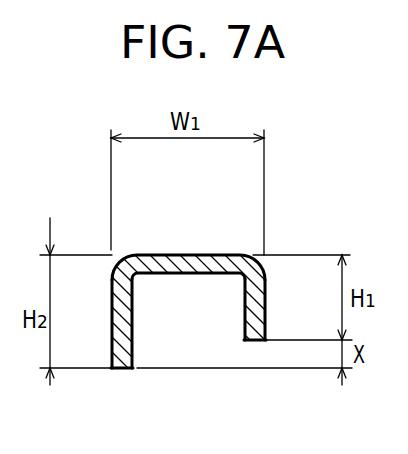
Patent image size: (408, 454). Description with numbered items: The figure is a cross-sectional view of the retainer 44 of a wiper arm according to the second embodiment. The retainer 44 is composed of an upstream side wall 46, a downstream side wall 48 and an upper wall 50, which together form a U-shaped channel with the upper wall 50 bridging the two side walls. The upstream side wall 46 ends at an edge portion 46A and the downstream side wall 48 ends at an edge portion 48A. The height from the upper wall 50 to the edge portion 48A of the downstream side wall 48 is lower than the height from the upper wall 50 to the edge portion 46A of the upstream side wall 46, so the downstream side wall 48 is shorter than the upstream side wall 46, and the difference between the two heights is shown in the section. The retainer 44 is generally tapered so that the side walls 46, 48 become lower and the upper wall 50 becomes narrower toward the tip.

The retainer 44 is at (180, 232).
The upper wall 50 is at (224, 254).
The upstream side wall 46 is at (111, 306).
The downstream side wall 48 is at (266, 310).
The edge portion of upstream side wall 46A is at (115, 369).
The edge portion of downstream side wall 48A is at (265, 342).